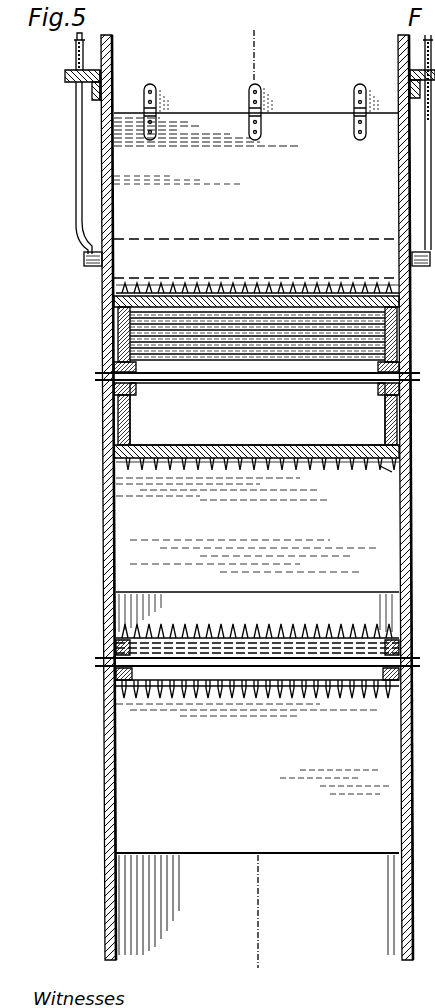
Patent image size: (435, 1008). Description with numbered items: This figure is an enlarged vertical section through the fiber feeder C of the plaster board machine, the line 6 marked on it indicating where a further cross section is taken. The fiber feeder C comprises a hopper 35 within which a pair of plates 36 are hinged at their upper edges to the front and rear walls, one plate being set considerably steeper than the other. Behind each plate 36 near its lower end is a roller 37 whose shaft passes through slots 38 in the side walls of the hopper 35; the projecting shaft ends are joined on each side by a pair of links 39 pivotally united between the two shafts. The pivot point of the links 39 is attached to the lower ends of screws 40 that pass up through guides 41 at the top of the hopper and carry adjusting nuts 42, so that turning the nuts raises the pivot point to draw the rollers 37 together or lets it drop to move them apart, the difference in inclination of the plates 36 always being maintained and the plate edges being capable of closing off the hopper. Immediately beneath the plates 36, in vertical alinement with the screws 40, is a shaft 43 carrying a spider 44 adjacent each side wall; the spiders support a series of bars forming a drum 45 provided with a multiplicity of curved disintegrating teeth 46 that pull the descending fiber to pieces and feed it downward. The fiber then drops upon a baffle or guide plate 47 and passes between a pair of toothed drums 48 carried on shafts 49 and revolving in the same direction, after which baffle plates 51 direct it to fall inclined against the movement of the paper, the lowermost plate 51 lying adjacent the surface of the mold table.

The section line 6— 6 is at (255, 500).
The hopper 35 is at (104, 520).
The plates 36 is at (256, 164).
The roller 37 is at (362, 240).
The slots 38 is at (416, 268).
The links 39 is at (94, 268).
The screws 40 is at (76, 140).
The guides 41 is at (70, 84).
The adjusting nuts 42 is at (74, 62).
The shaft 43 is at (102, 383).
The spider 44 is at (130, 420).
The drum 45 is at (257, 414).
The disintegrating teeth 46 is at (290, 285).
The baffle or guide plate 47 is at (386, 550).
The toothed drums 48 is at (394, 624).
The shafts 49 is at (102, 668).
The baffle plates 51 is at (390, 800).
The fiber feeder C is at (112, 456).